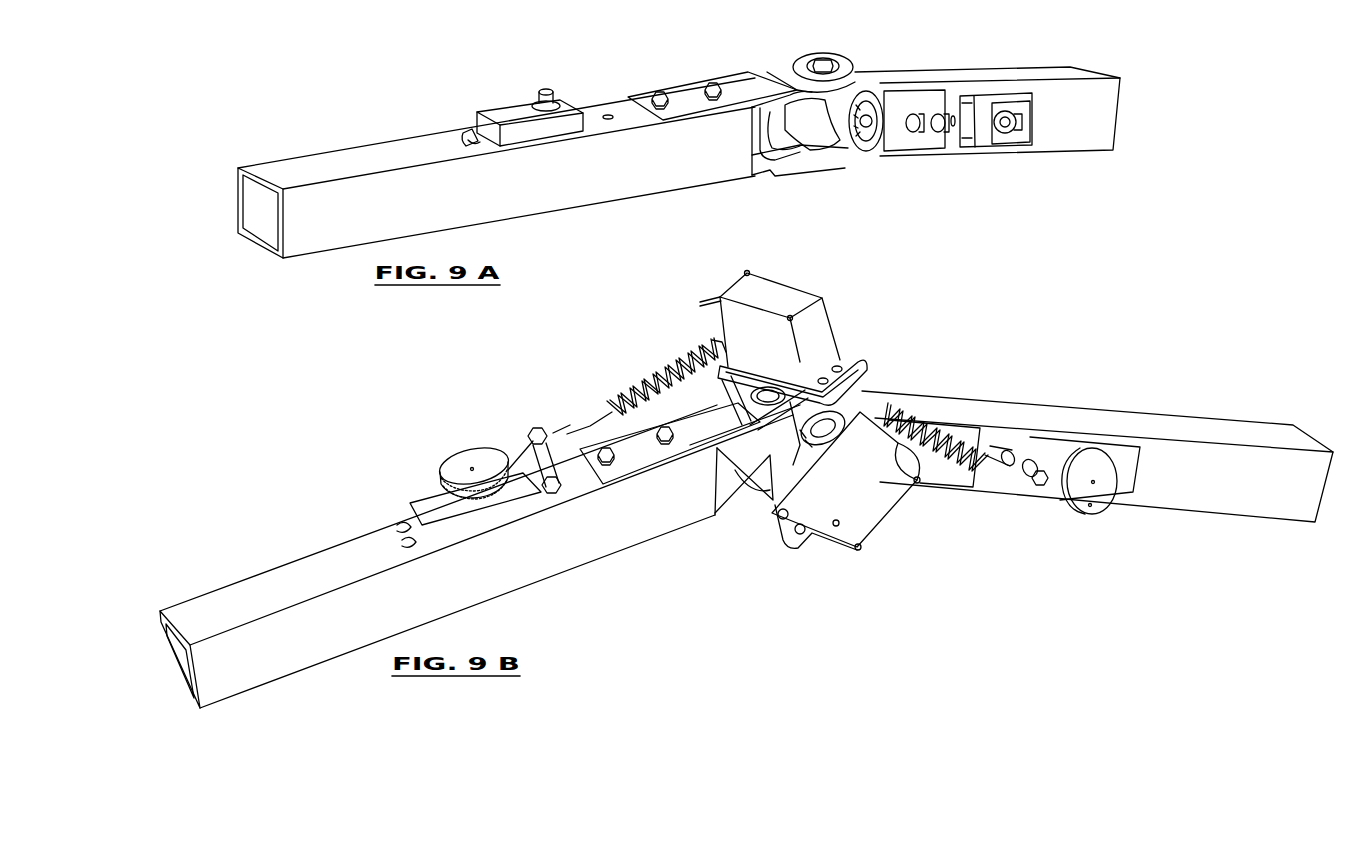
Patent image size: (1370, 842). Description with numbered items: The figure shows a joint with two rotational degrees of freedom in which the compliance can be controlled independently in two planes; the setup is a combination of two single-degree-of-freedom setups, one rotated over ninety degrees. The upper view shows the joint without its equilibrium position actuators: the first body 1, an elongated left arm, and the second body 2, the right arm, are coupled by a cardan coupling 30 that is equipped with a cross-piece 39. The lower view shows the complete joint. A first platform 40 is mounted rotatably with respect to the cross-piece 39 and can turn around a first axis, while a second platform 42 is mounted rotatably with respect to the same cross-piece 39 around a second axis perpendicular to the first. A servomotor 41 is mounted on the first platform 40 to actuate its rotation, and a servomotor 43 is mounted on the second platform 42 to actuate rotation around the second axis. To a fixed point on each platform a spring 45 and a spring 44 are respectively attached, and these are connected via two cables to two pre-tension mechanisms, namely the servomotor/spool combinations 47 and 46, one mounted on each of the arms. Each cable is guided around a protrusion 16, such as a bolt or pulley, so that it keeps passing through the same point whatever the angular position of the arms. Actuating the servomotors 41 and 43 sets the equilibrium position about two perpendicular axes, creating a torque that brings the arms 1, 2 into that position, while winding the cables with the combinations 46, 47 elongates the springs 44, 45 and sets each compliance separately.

In FIG. 9A, the first body 1 is at (367, 222).
In FIG. 9B, the first body 1 is at (288, 585).
In FIG. 9A, the second body 2 is at (1072, 130).
In FIG. 9B, the second body 2 is at (1250, 432).
In FIG. 9B, the protrusion 16 is at (532, 430).
In FIG. 9A, the cardan coupling 30 is at (737, 47).
In FIG. 9B, the cardan coupling 30 is at (870, 378).
In FIG. 9A, the cross-piece 39 is at (848, 147).
In FIG. 9B, the cross-piece 39 is at (783, 430).
In FIG. 9B, the first platform 40 is at (776, 486).
In FIG. 9B, the servomotor 41 is at (863, 523).
In FIG. 9B, the second platform 42 is at (872, 375).
In FIG. 9B, the servomotor 43 is at (820, 297).
In FIG. 9B, the spring 44 is at (637, 378).
In FIG. 9B, the spring 45 is at (953, 427).
In FIG. 9B, the servomotor/spool combination 46 is at (473, 463).
In FIG. 9B, the servomotor/spool combination 47 is at (1102, 477).